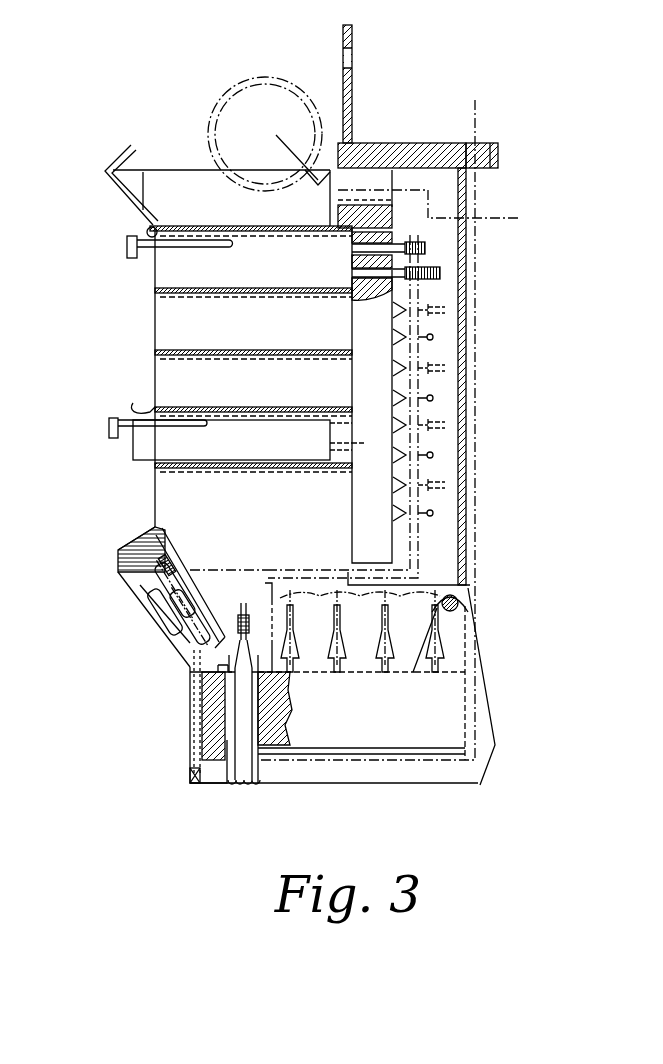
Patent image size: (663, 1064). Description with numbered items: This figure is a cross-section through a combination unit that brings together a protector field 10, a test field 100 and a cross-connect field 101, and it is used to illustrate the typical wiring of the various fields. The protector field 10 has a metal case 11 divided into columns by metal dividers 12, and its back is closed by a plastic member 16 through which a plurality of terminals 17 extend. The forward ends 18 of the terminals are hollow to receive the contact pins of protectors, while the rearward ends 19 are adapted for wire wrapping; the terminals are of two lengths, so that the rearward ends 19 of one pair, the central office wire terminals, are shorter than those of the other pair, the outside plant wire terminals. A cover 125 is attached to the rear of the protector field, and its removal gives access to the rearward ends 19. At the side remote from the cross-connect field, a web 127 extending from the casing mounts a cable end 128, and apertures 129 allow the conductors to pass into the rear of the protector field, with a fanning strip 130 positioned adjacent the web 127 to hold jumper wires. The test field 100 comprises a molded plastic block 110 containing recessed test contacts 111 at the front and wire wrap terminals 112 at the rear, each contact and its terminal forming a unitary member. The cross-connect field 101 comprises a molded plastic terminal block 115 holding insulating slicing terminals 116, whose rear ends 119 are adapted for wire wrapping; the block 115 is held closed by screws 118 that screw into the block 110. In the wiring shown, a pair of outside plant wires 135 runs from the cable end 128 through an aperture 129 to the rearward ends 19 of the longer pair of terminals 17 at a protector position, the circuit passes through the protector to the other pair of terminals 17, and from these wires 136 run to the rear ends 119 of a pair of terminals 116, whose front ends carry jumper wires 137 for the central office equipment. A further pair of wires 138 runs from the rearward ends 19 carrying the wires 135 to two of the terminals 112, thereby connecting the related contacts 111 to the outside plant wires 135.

The protector field 10 is at (146, 358).
The metal case 11 is at (197, 220).
The metal dividers 12 is at (150, 236).
The plastic member 16 is at (428, 247).
The terminals 17 is at (442, 272).
The forward ends 18 is at (352, 278).
The rearward ends 19 is at (410, 337).
The test field 100 is at (152, 620).
The cross-connect field 101 is at (298, 790).
The molded plastic block 110 is at (128, 548).
The test contacts 111 is at (145, 590).
The wire wrap terminals 112 is at (210, 600).
The terminal block 115 is at (212, 708).
The insulating slicing terminals 116 is at (246, 788).
The screws 118 is at (198, 790).
The rear ends 119 is at (478, 590).
The cover 125 is at (400, 292).
The web 127 is at (352, 42).
The cable end 128 is at (262, 78).
The apertures 129 is at (370, 182).
The fanning strip 130 is at (492, 142).
The wires 135 is at (480, 194).
The wires 136 is at (422, 352).
The jumper wires 137 is at (478, 457).
The wires 138 is at (440, 386).